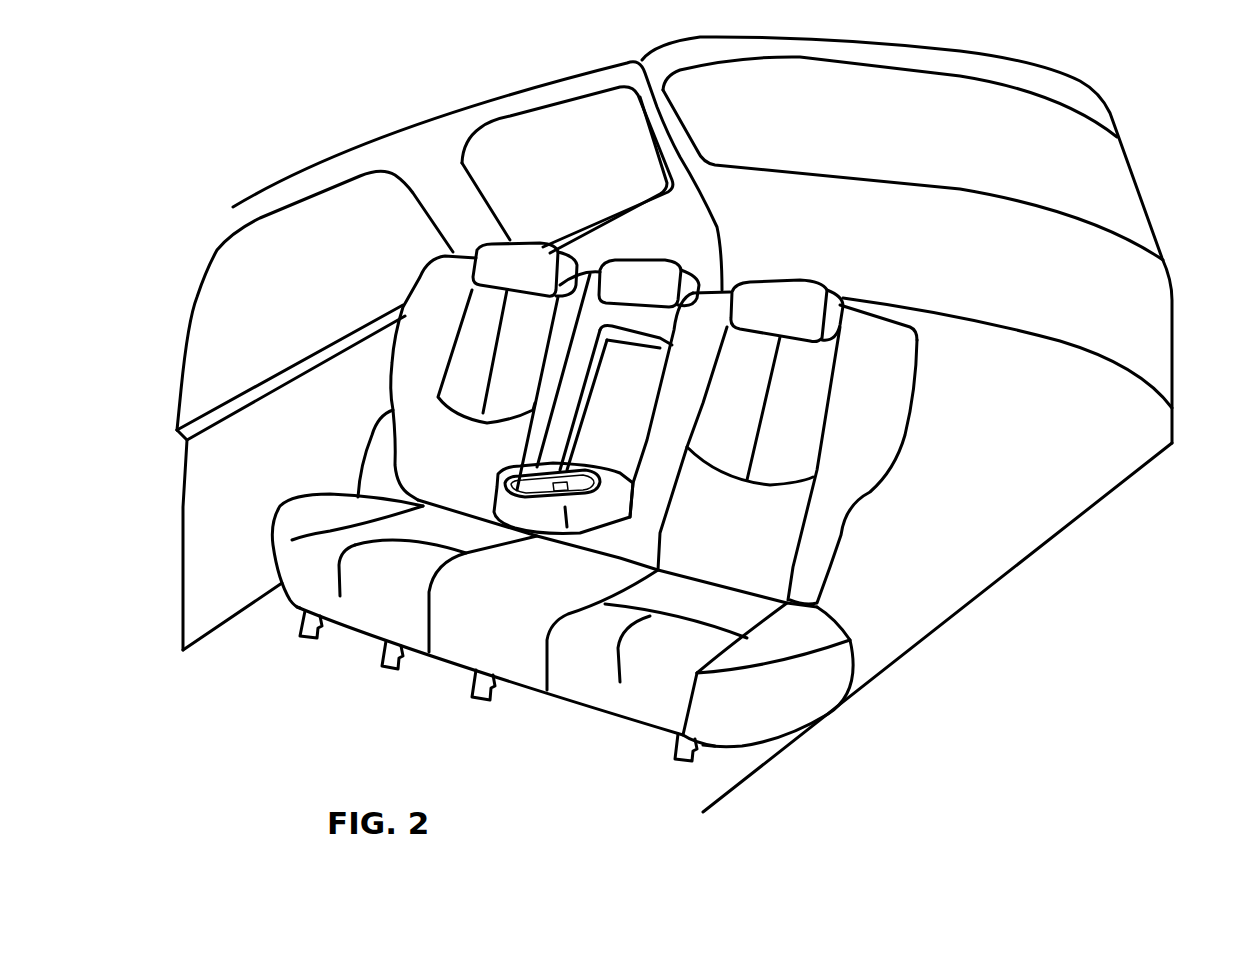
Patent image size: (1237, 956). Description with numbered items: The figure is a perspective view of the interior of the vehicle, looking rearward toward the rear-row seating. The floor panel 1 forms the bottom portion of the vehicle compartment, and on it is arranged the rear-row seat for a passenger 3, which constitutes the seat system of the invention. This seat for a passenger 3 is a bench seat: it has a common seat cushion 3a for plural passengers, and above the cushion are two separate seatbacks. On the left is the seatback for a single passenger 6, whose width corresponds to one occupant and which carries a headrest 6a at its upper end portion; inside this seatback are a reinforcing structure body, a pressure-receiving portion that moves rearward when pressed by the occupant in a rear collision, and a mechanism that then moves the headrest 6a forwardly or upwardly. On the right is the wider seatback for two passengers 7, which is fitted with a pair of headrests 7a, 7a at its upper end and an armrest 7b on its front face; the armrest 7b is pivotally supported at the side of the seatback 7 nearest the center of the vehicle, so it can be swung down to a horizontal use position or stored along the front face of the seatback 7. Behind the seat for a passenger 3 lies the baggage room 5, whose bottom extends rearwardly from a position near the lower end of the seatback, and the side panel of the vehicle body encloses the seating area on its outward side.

The floor panel 1 is at (680, 781).
The seat for a passenger 3 is at (919, 451).
The seat cushion 3a is at (305, 494).
The baggage room 5 is at (1115, 412).
The seatback for a single passenger 6 is at (418, 315).
The headrest 6a is at (526, 252).
The seatback for two passengers 7 is at (908, 352).
The headrest 7a is at (648, 271).
The armrest 7b is at (513, 510).